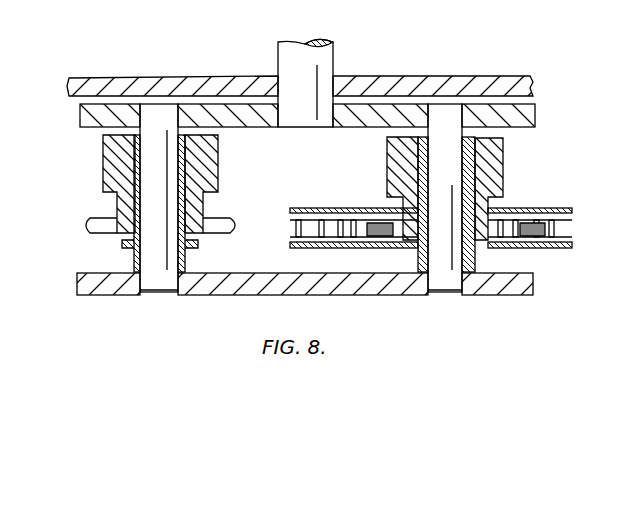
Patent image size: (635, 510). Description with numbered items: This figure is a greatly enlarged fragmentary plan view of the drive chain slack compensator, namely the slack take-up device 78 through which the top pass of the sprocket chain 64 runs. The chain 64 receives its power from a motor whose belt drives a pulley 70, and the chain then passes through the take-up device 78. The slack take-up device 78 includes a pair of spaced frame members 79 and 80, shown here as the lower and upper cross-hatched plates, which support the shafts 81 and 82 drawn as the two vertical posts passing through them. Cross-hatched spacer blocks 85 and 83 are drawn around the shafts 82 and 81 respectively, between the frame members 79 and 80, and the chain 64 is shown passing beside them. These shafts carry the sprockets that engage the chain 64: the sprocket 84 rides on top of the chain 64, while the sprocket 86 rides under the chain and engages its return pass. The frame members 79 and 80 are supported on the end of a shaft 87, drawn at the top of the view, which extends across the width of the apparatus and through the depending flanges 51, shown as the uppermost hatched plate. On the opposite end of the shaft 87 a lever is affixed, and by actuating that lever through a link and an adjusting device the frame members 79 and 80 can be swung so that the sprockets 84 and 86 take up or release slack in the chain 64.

The pulley 70 is at (301, 178).
The depending flanges 51 is at (428, 82).
The frame member 80 is at (376, 118).
The shaft 87 is at (293, 47).
The shaft 82 is at (163, 116).
The left spacer block 85 is at (108, 160).
The sprocket 86 is at (88, 236).
The shaft 81 is at (447, 118).
The right spacer block 83 is at (492, 174).
The sprocket chain 64 is at (296, 212).
The sprocket 84 is at (386, 226).
The frame member 79 is at (227, 290).
The slack take-up device 78 is at (98, 306).